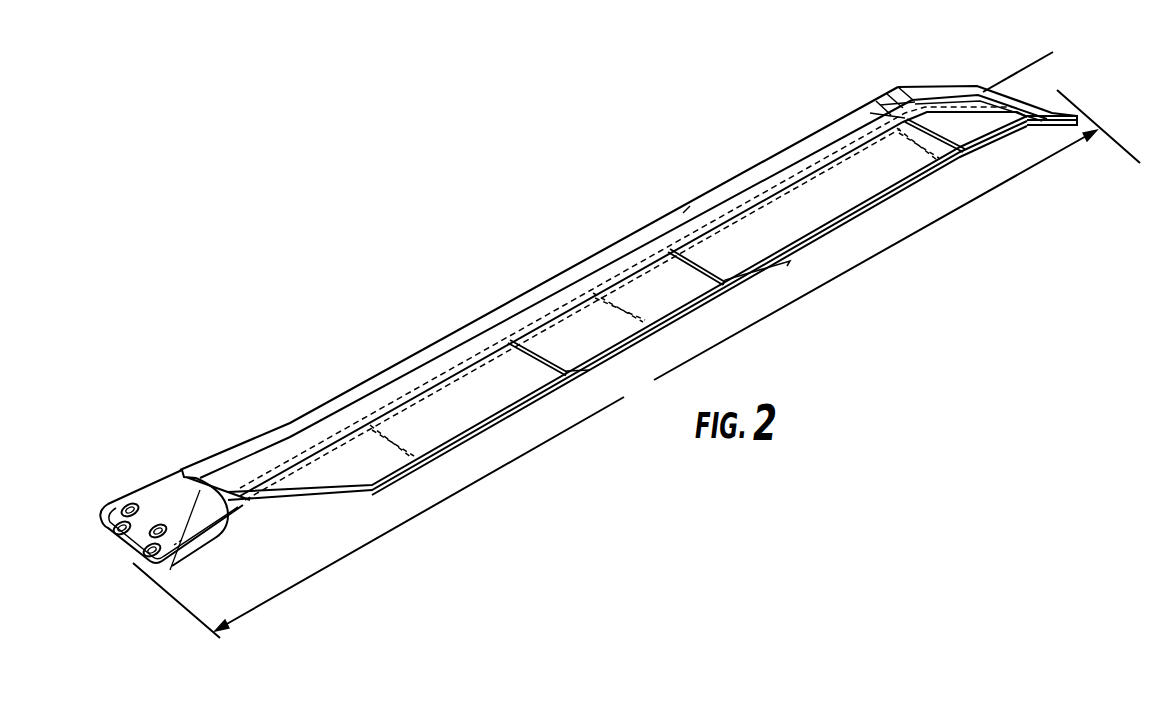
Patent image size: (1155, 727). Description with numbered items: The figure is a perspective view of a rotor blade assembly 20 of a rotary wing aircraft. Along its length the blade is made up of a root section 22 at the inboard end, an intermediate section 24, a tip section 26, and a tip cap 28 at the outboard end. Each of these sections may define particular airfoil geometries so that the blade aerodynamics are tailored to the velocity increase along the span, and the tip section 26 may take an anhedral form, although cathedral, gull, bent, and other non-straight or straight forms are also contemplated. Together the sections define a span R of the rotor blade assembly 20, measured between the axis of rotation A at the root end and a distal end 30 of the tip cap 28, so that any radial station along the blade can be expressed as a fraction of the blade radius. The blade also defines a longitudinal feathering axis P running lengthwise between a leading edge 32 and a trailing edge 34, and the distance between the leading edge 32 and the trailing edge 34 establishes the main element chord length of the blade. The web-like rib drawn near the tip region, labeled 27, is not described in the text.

The rotor blade assembly 20 is at (571, 208).
The root section 22 is at (222, 444).
The intermediate section 24 is at (546, 272).
The tip section 26 is at (888, 82).
The web rib 27 is at (971, 130).
The tip cap 28 is at (1042, 88).
The distal end 30 is at (1066, 110).
The leading edge 32 is at (653, 222).
The trailing edge 34 is at (688, 310).
The axis of rotation A is at (196, 516).
The longitudinal feathering axis P is at (1023, 68).
The span R is at (636, 364).